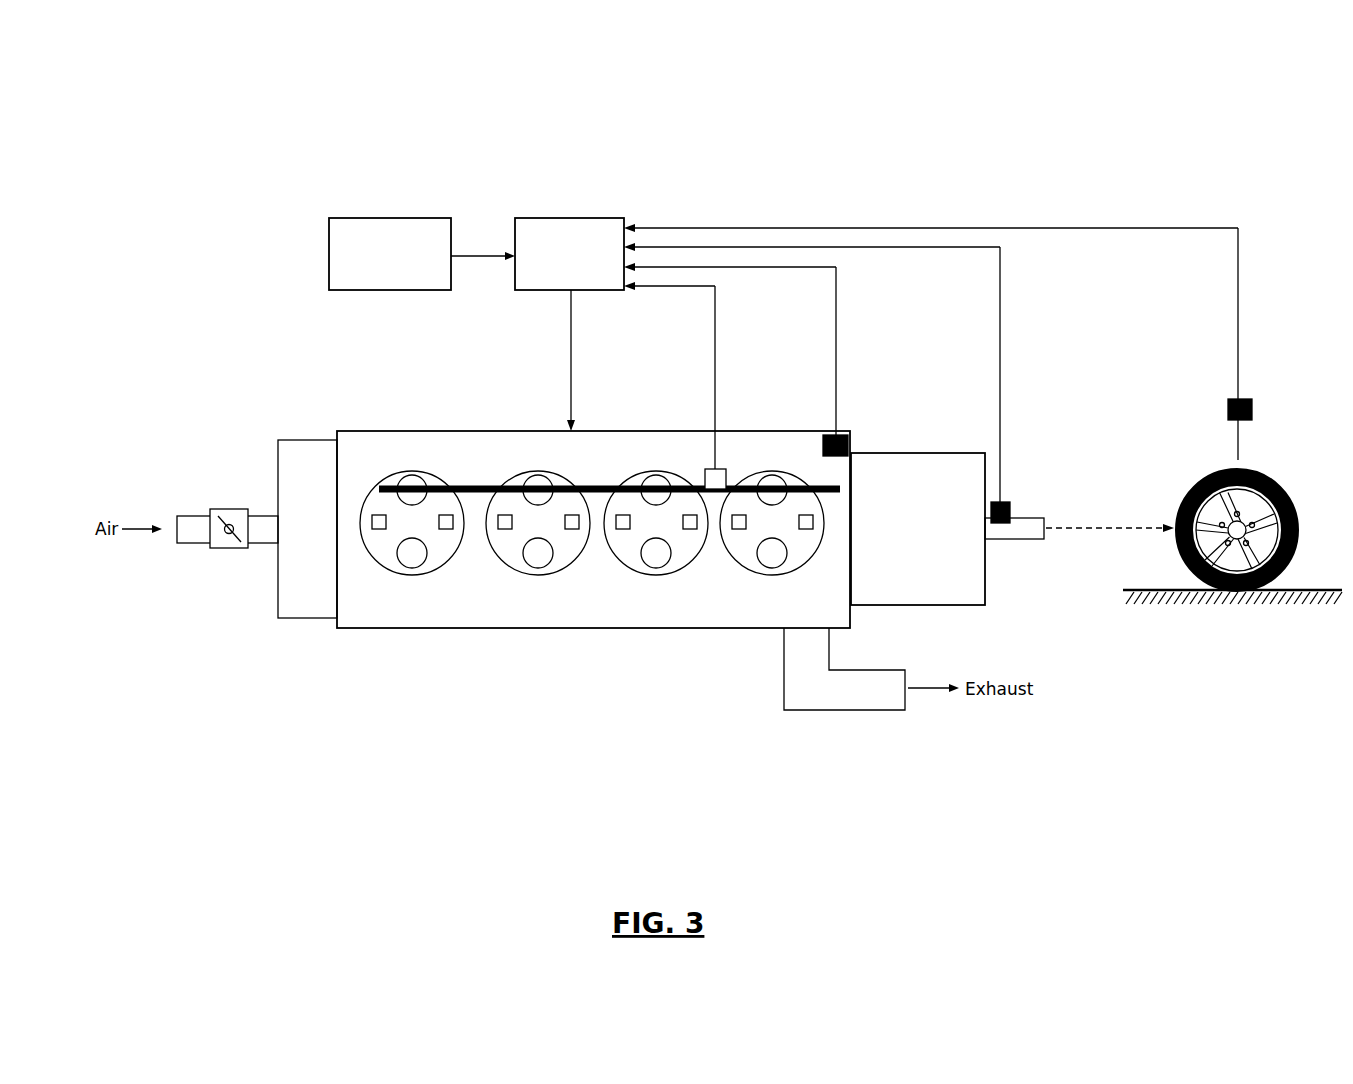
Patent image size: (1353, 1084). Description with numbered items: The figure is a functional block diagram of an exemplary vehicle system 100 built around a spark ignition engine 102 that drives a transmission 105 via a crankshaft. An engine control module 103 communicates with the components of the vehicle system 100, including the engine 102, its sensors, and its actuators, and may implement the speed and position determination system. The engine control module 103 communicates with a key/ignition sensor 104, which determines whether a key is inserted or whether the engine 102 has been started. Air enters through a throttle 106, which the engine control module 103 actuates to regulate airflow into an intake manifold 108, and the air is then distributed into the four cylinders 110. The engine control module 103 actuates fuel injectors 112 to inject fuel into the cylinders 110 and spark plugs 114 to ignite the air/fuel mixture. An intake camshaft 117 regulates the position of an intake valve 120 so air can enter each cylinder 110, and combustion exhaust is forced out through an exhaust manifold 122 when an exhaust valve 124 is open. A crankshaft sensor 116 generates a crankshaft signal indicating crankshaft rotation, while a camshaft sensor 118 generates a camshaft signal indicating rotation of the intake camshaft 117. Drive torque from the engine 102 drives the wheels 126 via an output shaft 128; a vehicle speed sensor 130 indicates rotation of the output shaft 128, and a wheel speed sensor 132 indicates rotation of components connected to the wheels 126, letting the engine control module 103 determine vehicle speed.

The vehicle system 100 is at (243, 122).
The engine 102 is at (390, 629).
The engine control module 103 is at (565, 218).
The key/ignition sensor 104 is at (383, 218).
The transmission 105 is at (904, 453).
The throttle 106 is at (228, 548).
The intake manifold 108 is at (305, 618).
The cylinders 110 is at (636, 482).
The fuel injectors 112 is at (810, 530).
The spark plugs 114 is at (738, 532).
The crankshaft sensor 116 is at (849, 446).
The intake camshaft 117 is at (470, 482).
The camshaft sensor 118 is at (727, 475).
The intake valve 120 is at (531, 481).
The exhaust manifold 122 is at (830, 711).
The exhaust valve 124 is at (530, 560).
The wheels 126 is at (1265, 478).
The output shaft 128 is at (1013, 540).
The vehicle speed sensor 130 is at (1011, 513).
The wheel speed sensors 132 is at (1252, 410).